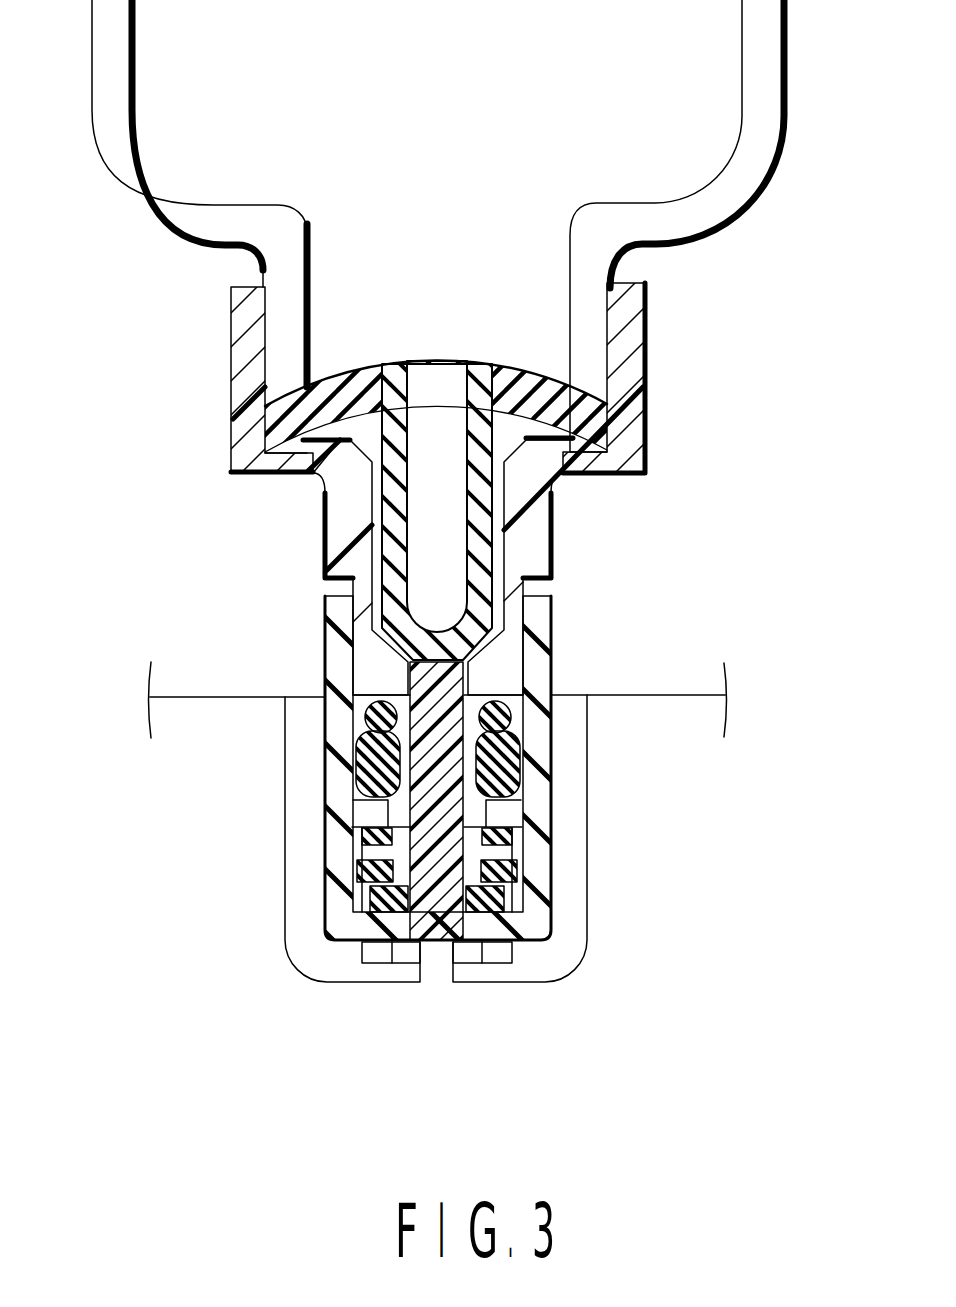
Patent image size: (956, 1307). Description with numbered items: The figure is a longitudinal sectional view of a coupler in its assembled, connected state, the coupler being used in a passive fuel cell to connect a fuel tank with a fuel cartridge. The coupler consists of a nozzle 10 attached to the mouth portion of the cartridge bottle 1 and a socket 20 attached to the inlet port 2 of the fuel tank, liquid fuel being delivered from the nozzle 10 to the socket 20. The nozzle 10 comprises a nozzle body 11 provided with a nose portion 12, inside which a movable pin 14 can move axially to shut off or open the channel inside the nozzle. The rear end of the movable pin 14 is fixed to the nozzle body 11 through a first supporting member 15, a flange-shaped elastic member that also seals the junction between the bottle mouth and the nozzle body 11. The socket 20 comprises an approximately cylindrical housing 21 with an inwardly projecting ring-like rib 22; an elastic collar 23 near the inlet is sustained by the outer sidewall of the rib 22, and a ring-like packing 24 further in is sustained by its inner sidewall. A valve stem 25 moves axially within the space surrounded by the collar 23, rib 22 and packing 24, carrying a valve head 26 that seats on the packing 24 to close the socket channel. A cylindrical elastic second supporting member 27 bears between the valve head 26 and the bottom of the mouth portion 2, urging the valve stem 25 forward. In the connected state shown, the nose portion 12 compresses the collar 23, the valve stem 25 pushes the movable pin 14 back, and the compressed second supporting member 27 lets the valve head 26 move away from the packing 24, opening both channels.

The cartridge bottle 1 is at (778, 28).
The inlet port of fuel tank 2 is at (572, 928).
The nozzle 10 is at (467, 489).
The nozzle body 11 is at (229, 313).
The nose portion 12 is at (340, 538).
The movable pin 14 is at (385, 489).
The first supporting member 15 is at (325, 383).
The socket 20 is at (461, 818).
The housing 21 is at (337, 790).
The ring-like rib 22 is at (503, 815).
The collar 23 is at (345, 768).
The ring-like packing 24 is at (360, 835).
The valve stem 25 is at (372, 748).
The valve head 26 is at (382, 866).
The second supporting member 27 is at (385, 950).